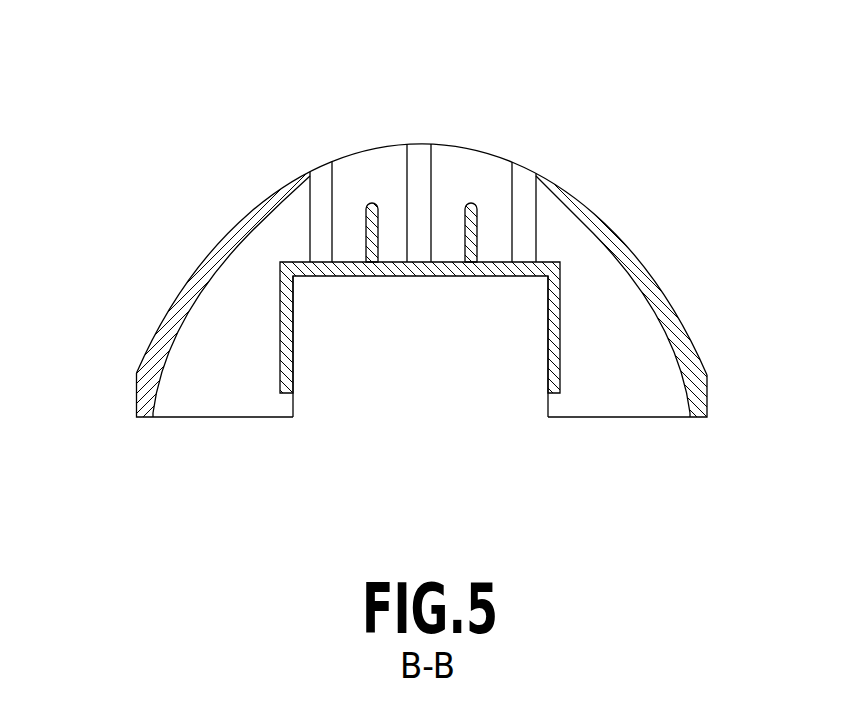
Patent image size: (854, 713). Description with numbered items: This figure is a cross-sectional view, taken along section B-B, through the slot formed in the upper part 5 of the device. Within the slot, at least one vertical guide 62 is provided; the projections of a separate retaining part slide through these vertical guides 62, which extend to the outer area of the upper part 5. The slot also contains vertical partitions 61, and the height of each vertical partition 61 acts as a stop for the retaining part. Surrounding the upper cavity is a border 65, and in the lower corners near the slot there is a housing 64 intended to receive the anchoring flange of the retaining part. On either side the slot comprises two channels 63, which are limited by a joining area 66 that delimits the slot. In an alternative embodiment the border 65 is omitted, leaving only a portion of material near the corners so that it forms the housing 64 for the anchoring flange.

The upper part 5 is at (163, 120).
The vertical partition 61 is at (370, 202).
The vertical guide 62 is at (317, 200).
The channel 63 is at (220, 377).
The housing 64 is at (293, 413).
The border 65 is at (293, 338).
The joining area 66 is at (147, 360).